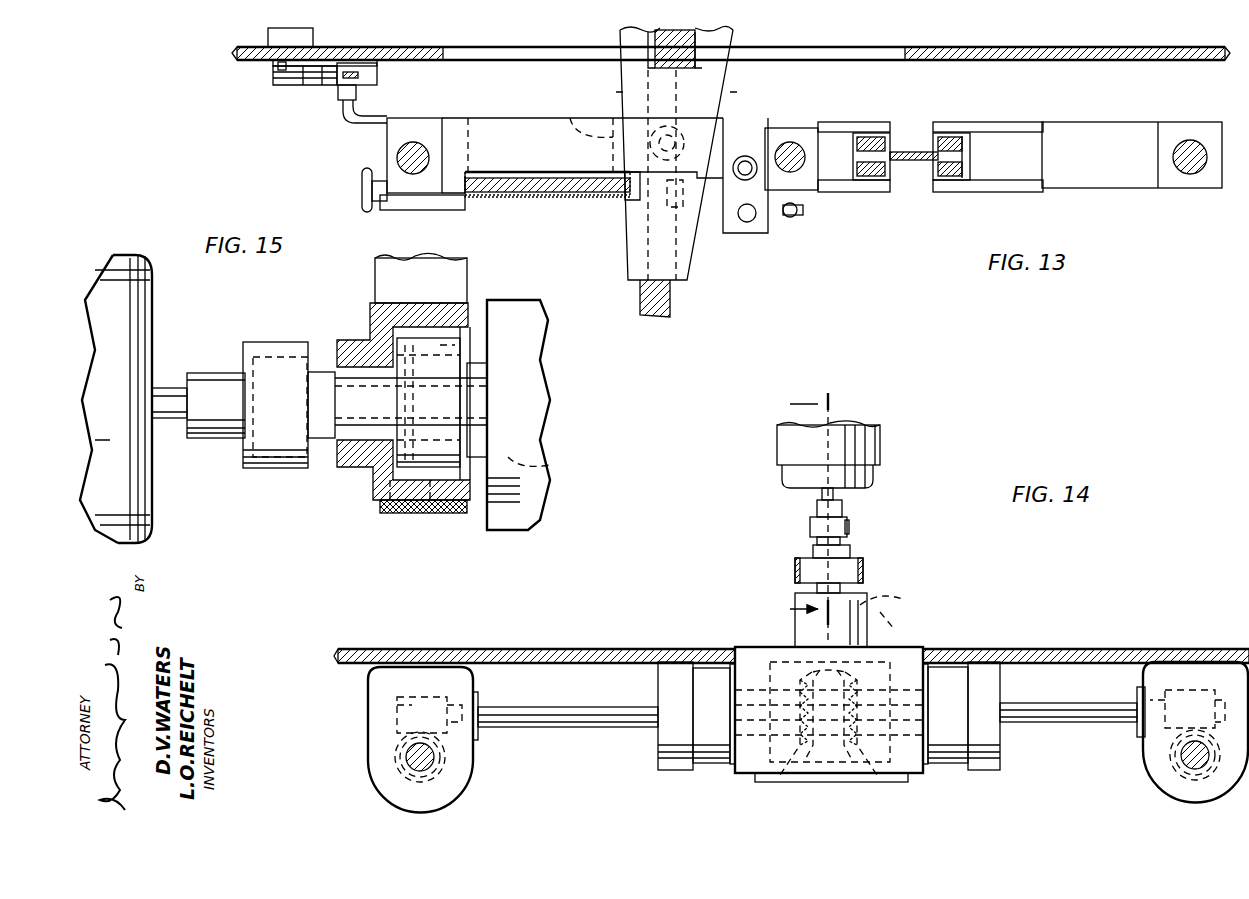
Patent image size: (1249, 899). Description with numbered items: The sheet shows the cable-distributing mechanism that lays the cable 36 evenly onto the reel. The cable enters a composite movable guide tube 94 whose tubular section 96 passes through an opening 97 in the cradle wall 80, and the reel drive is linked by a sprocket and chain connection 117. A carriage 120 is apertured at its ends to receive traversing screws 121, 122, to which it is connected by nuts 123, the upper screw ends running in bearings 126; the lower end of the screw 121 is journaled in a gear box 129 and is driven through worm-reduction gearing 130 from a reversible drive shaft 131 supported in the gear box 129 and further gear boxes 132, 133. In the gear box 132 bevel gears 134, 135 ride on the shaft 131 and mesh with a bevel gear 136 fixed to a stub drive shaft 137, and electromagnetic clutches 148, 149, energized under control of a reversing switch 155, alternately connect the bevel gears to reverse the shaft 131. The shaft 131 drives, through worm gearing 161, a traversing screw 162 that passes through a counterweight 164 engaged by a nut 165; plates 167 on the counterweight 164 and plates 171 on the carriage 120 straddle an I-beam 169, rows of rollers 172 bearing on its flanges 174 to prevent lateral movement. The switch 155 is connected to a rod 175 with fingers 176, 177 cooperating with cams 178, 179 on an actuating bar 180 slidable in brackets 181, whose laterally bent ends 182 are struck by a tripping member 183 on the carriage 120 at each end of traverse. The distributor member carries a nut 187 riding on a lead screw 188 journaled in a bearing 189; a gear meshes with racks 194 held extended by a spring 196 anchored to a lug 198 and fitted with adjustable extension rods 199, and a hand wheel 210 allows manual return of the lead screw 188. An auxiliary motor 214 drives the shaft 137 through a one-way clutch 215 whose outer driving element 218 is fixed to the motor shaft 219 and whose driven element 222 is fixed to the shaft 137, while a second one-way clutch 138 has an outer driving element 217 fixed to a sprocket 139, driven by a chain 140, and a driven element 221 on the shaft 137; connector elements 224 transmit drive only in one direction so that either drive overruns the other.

In FIG. 13, the cable 36 is at (670, 302).
In FIG. 13, the cradle wall 80 is at (1122, 60).
In FIG. 14, the cradle wall 80 is at (548, 649).
In FIG. 13, the composite movable guide tube 94 is at (572, 125).
In FIG. 13, the tubular section 96 is at (735, 35).
In FIG. 13, the opening 97 is at (875, 47).
In FIG. 13, the sprocket and chain connection 117 is at (648, 135).
In FIG. 13, the carriage 120 is at (528, 115).
In FIG. 13, the traversing screw 121 is at (400, 158).
In FIG. 14, the traversing screw 121 is at (408, 757).
In FIG. 13, the traversing screw 122 is at (790, 142).
In FIG. 13, the nut 123 is at (428, 135).
In FIG. 15, the bearing 126 is at (528, 503).
In FIG. 14, the gear box 129 is at (460, 775).
In FIG. 14, the worm-reduction gearing 130 is at (400, 740).
In FIG. 14, the reversible drive shaft 131 is at (555, 728).
In FIG. 14, the gear box 132 is at (918, 782).
In FIG. 14, the gear box 133 is at (1160, 782).
In FIG. 14, the bevel gear 134 is at (790, 782).
In FIG. 14, the bevel gear 135 is at (862, 782).
In FIG. 14, the bevel gear 136 is at (868, 650).
In FIG. 15, the stub drive shaft 137 is at (333, 440).
In FIG. 14, the stub drive shaft 137 is at (877, 620).
In FIG. 15, the one-way clutch 138 is at (440, 512).
In FIG. 15, the sprocket 139 is at (368, 488).
In FIG. 14, the sprocket 139 is at (820, 552).
In FIG. 15, the chain 140 is at (390, 275).
In FIG. 14, the electromagnetic clutch 148 is at (680, 772).
In FIG. 14, the electromagnetic clutch 149 is at (985, 770).
In FIG. 13, the reversing switch 155 is at (268, 36).
In FIG. 14, the worm gearing 161 is at (1165, 740).
In FIG. 13, the traversing screw 162 is at (1190, 140).
In FIG. 14, the traversing screw 162 is at (1185, 755).
In FIG. 13, the counterweight 164 is at (1100, 188).
In FIG. 13, the nut 165 is at (1172, 188).
In FIG. 13, the plate 167 is at (990, 122).
In FIG. 13, the I-beam 169 is at (908, 160).
In FIG. 13, the plate 171 is at (855, 122).
In FIG. 13, the roller 172 is at (890, 150).
In FIG. 13, the flange 174 is at (870, 137).
In FIG. 13, the rod 175 is at (273, 64).
In FIG. 13, the finger 176 is at (280, 72).
In FIG. 13, the finger 177 is at (296, 86).
In FIG. 13, the cam 178 is at (318, 86).
In FIG. 13, the cam 179 is at (330, 86).
In FIG. 13, the actuating bar 180 is at (350, 72).
In FIG. 13, the bracket 181 is at (380, 78).
In FIG. 13, the laterally bent end 182 is at (357, 93).
In FIG. 13, the tripping member 183 is at (345, 113).
In FIG. 13, the nut 187 is at (625, 200).
In FIG. 13, the lead screw 188 is at (540, 197).
In FIG. 13, the bearing 189 is at (428, 208).
In FIG. 13, the rack 194 is at (745, 222).
In FIG. 13, the spring 196 is at (787, 218).
In FIG. 13, the lug 198 is at (793, 218).
In FIG. 13, the adjustable extension rod 199 is at (745, 156).
In FIG. 13, the hand wheel 210 is at (365, 210).
In FIG. 15, the motor 214 is at (145, 302).
In FIG. 14, the motor 214 is at (880, 445).
In FIG. 15, the one-way clutch 215 is at (285, 470).
In FIG. 14, the one-way clutch 215 is at (850, 530).
In FIG. 15, the outer driving element 217 is at (395, 513).
In FIG. 15, the outer driving element 218 is at (245, 467).
In FIG. 15, the motor shaft 219 is at (172, 388).
In FIG. 14, the motor shaft 219 is at (822, 495).
In FIG. 15, the driven element 221 is at (462, 365).
In FIG. 15, the driven element 222 is at (320, 372).
In FIG. 15, the connector element 224 is at (460, 345).